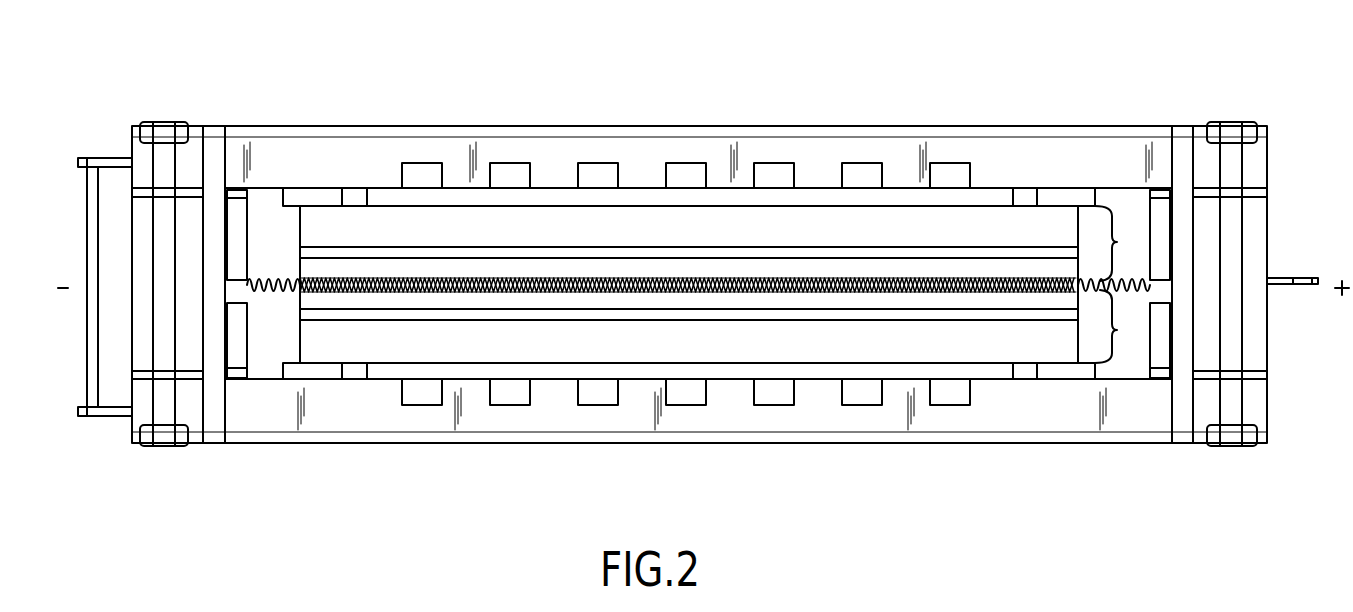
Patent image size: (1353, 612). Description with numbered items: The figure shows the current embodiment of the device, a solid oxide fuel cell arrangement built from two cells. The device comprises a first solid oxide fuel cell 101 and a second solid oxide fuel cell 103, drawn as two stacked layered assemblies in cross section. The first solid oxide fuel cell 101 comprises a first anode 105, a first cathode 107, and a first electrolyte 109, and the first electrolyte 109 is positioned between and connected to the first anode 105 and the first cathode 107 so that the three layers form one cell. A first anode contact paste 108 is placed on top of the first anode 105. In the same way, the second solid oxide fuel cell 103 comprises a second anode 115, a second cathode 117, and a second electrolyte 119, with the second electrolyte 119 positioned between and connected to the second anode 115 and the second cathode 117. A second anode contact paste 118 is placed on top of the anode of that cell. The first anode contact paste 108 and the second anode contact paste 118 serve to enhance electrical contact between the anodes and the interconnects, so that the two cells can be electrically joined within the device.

The first solid oxide fuel cell 101 is at (1117, 244).
The second solid oxide fuel cell 103 is at (1117, 330).
The first anode 105 is at (637, 215).
The first cathode 107 is at (487, 264).
The first anode contact paste 108 is at (545, 197).
The first electrolyte 109 is at (333, 250).
The second anode 115 is at (563, 353).
The second cathode 117 is at (480, 305).
The second anode contact paste 118 is at (738, 373).
The second electrolyte 119 is at (322, 315).